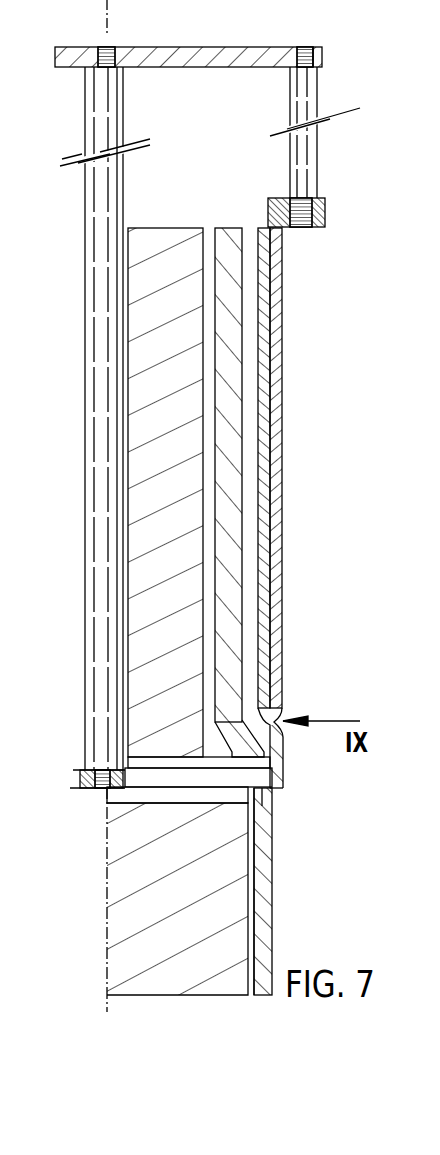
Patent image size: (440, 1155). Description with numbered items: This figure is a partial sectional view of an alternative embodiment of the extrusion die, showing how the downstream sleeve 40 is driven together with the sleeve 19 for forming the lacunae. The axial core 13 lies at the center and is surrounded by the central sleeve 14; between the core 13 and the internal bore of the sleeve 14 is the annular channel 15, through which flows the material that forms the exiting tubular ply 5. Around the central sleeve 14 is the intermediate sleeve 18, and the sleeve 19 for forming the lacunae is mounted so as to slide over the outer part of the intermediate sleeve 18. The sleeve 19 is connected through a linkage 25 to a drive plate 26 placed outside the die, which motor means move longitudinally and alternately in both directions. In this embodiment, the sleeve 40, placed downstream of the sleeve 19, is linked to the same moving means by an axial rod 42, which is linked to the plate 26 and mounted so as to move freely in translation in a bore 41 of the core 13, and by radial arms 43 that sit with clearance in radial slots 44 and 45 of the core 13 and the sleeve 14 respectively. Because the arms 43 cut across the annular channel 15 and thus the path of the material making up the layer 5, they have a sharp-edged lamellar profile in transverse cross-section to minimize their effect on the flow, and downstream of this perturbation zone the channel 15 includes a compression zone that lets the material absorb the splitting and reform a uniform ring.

The drive plate 26 is at (203, 47).
The linkage 25 is at (307, 160).
The axial rod 42 is at (97, 343).
The bore 41 is at (128, 483).
The axial core 13 is at (155, 541).
The annular channel 15 is at (210, 611).
The intermediate sleeve 18 is at (278, 446).
The sleeve for forming the lacunae 19 is at (277, 520).
The sleeve 40 is at (284, 773).
The radial slot 45 is at (266, 800).
The radial arms 43 is at (160, 777).
The radial slot 44 is at (150, 800).
The tubular ply 5 is at (254, 880).
The central sleeve 14 is at (265, 922).